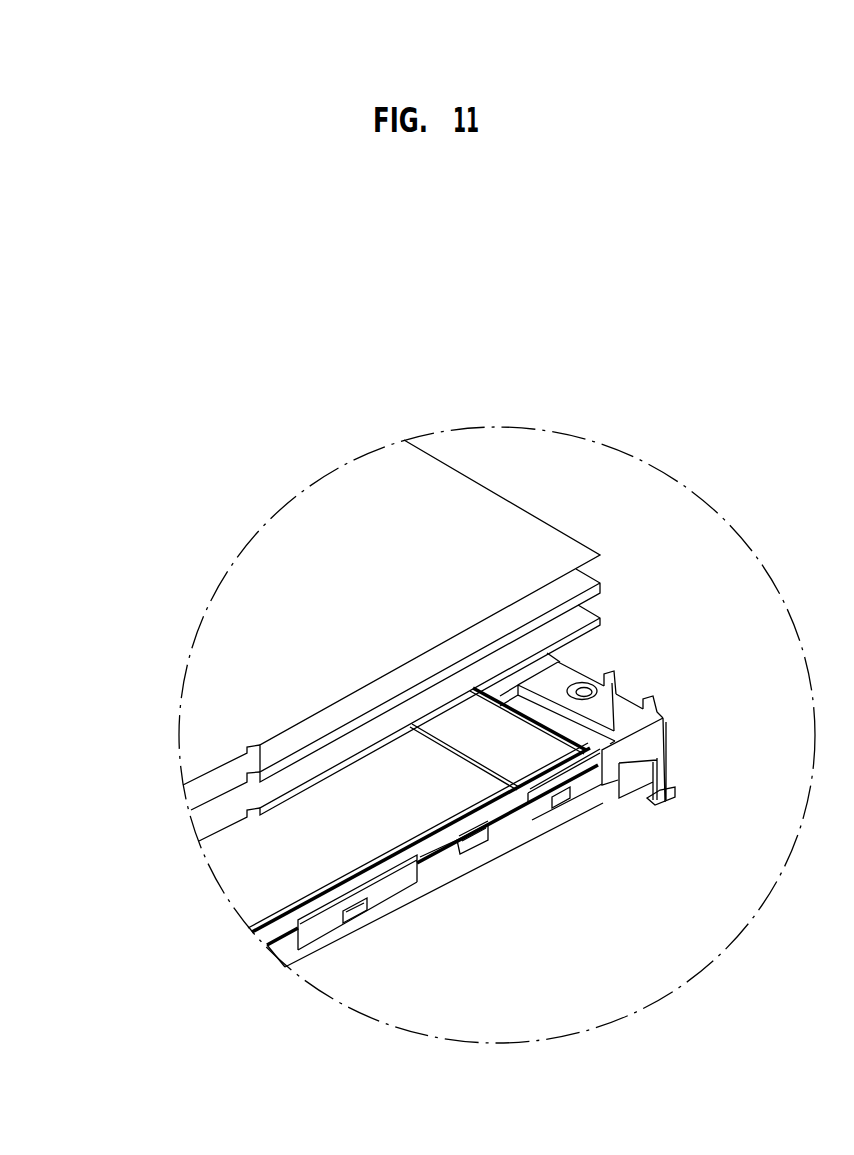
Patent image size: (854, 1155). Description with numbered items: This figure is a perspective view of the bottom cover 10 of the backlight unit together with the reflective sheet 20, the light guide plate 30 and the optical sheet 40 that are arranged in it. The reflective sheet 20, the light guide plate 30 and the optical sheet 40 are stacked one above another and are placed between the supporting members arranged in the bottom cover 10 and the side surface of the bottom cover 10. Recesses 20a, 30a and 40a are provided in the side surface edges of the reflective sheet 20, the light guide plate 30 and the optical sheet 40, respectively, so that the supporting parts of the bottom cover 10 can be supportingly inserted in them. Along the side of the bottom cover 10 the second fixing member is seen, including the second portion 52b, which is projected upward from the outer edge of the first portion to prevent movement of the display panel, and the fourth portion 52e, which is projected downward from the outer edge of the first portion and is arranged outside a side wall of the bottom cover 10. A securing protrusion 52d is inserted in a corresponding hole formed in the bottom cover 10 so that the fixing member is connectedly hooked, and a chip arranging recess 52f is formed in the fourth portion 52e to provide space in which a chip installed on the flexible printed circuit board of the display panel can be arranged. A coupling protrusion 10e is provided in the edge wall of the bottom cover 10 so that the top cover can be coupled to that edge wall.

The bottom cover 10 is at (602, 793).
The coupling protrusion 10e is at (360, 916).
The reflective sheet 20 is at (594, 620).
The recess 20a is at (247, 811).
The light guide plate 30 is at (594, 584).
The recess 30a is at (247, 775).
The optical sheet 40 is at (533, 542).
The recess 40a is at (247, 746).
The second portion 52b is at (380, 882).
The securing protrusion 52d is at (565, 797).
The fourth portion 52e is at (440, 870).
The chip arranging recess 52f is at (478, 840).